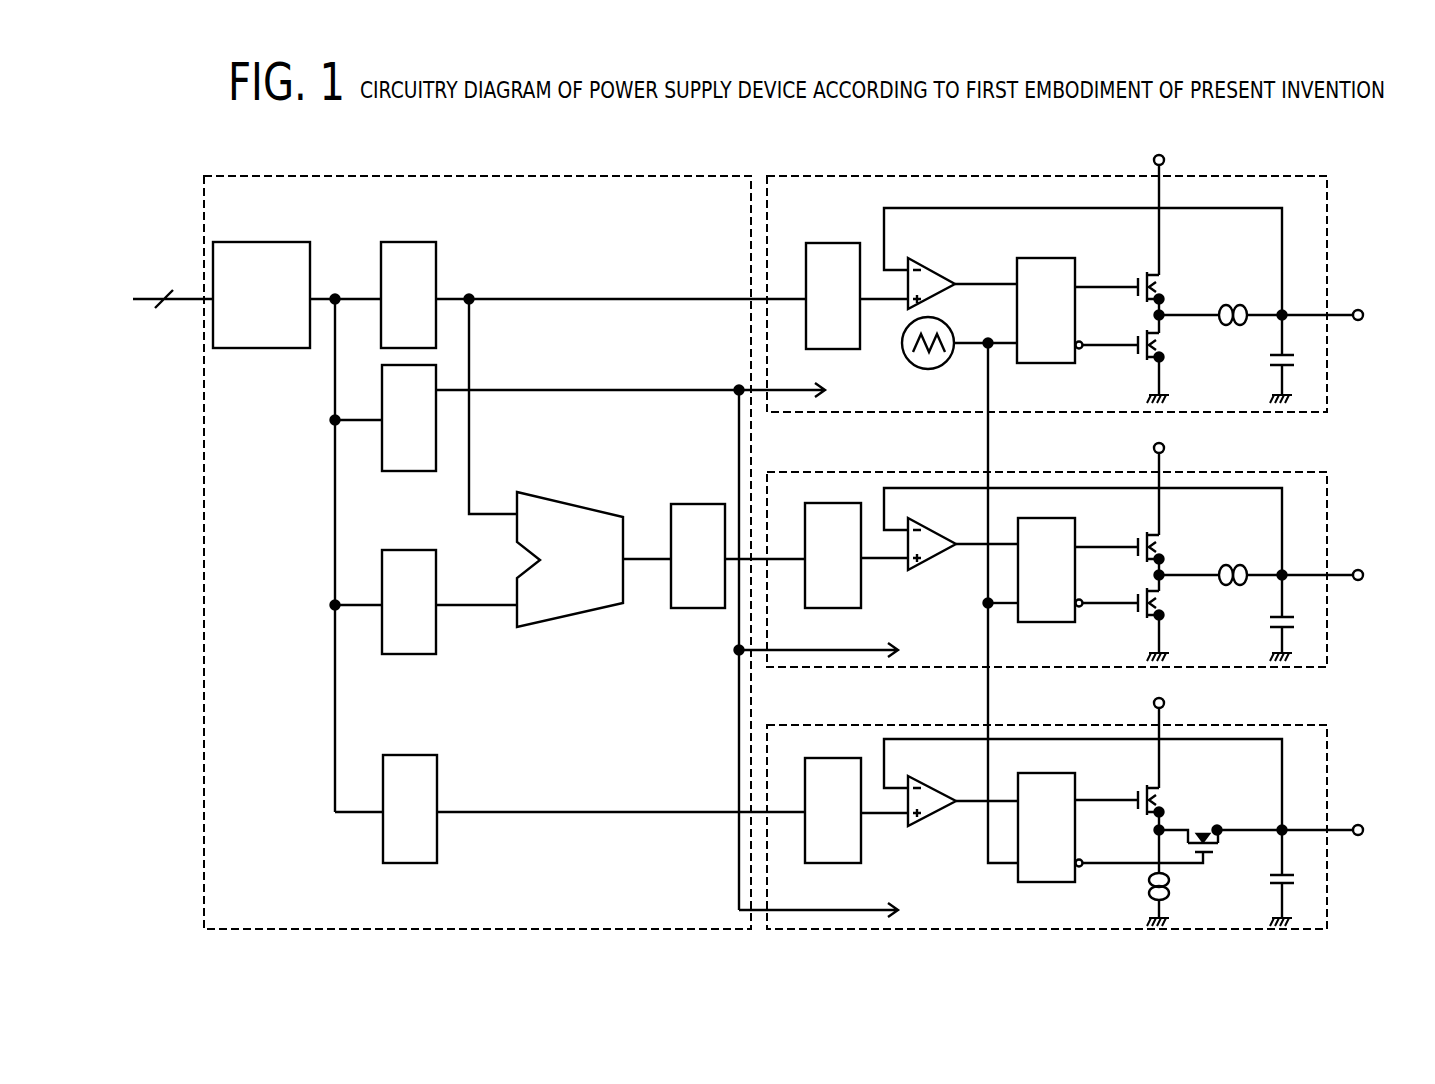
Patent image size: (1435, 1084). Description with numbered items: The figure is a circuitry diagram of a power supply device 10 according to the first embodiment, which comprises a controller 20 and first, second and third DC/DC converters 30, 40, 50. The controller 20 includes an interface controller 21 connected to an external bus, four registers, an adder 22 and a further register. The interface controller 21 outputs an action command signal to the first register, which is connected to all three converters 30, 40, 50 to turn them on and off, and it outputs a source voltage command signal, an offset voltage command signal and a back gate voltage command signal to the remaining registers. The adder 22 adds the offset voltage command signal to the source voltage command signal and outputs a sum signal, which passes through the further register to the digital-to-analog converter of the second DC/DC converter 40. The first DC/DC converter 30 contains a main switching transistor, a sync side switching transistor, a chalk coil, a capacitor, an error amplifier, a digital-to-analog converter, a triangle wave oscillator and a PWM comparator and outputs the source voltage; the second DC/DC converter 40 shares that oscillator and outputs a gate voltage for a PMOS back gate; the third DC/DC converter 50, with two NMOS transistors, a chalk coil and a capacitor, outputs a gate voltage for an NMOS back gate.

The power supply device 10 is at (1270, 156).
The controller 20 is at (375, 175).
The interface controller 21 is at (265, 241).
The adder 22 is at (578, 517).
The first DC/DC converter 30 is at (1329, 222).
The second DC/DC converter 40 is at (1329, 480).
The third DC/DC converter 50 is at (1329, 752).